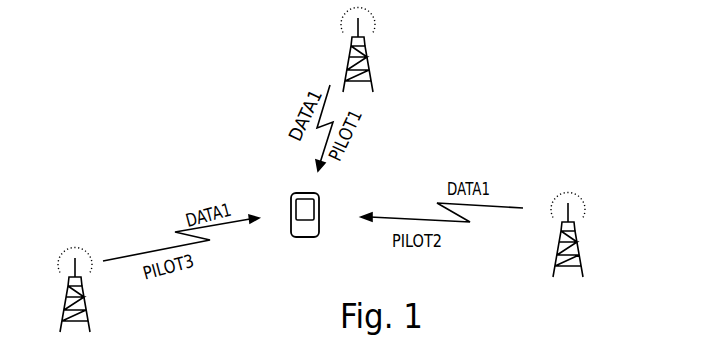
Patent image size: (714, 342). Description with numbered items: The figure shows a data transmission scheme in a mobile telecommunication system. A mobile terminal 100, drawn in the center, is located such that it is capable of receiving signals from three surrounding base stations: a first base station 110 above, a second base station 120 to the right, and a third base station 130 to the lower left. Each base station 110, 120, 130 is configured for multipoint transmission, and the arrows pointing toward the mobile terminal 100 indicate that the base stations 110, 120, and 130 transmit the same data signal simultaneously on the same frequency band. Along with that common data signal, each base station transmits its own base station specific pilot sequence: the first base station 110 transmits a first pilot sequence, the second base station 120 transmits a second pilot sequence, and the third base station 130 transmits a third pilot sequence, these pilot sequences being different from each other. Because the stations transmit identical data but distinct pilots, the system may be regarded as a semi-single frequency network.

The mobile terminal 100 is at (301, 193).
The first base station 110 is at (350, 59).
The second base station 120 is at (559, 249).
The third base station 130 is at (66, 303).